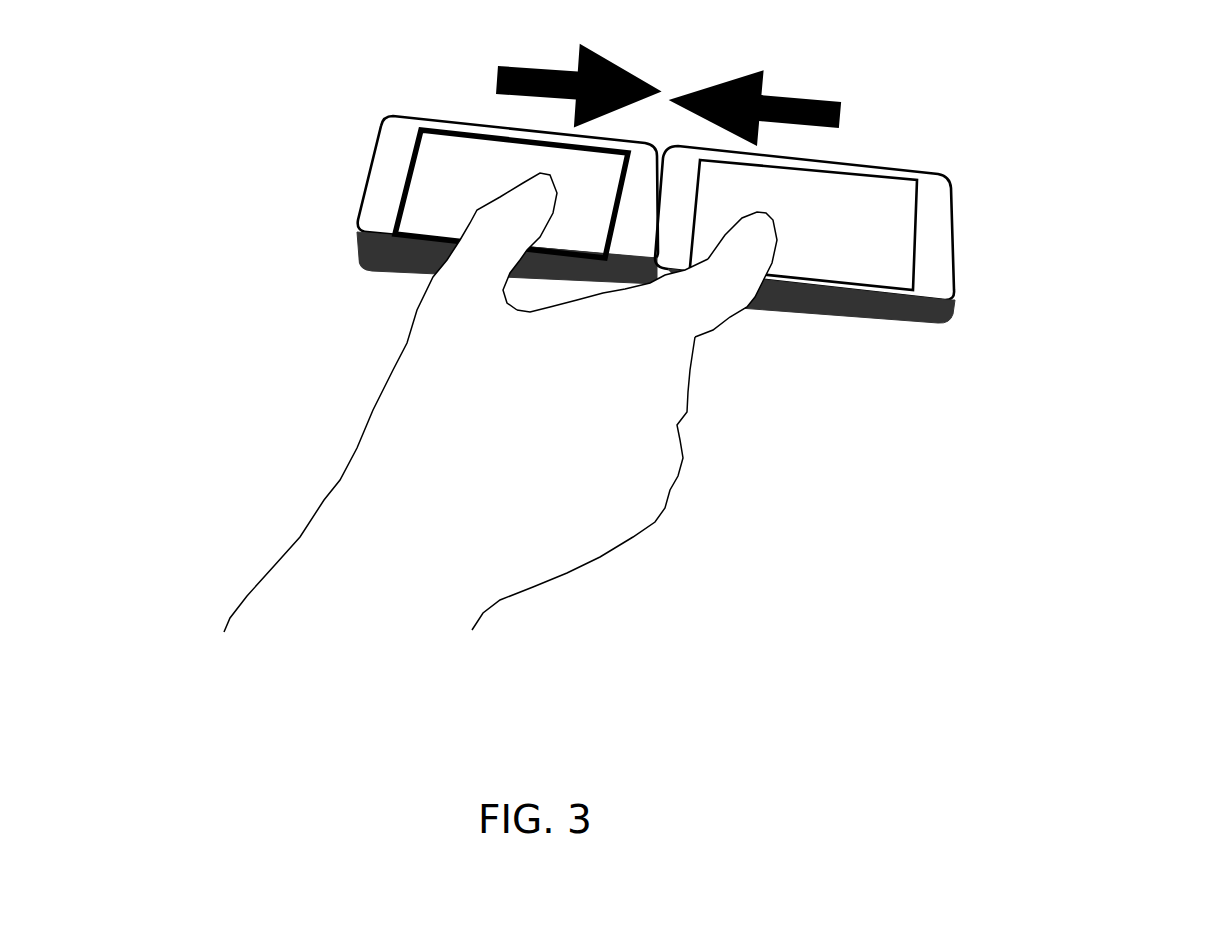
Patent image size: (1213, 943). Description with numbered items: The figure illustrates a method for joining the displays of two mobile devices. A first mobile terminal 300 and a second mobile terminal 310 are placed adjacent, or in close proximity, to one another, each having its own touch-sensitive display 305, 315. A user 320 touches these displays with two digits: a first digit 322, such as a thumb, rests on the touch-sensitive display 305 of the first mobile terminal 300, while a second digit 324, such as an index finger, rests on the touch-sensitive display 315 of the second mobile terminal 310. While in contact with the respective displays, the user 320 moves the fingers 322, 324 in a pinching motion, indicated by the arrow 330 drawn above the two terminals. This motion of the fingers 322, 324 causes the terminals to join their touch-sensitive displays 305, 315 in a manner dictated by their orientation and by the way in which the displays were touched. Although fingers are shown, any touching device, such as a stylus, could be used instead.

The first mobile terminal 300 is at (367, 223).
The touch-sensitive display 305 is at (440, 175).
The second mobile terminal 310 is at (952, 305).
The touch-sensitive display 315 is at (892, 238).
The user 320 is at (518, 402).
The first digit 322 is at (485, 238).
The second digit 324 is at (753, 262).
The arrow 330 is at (668, 88).